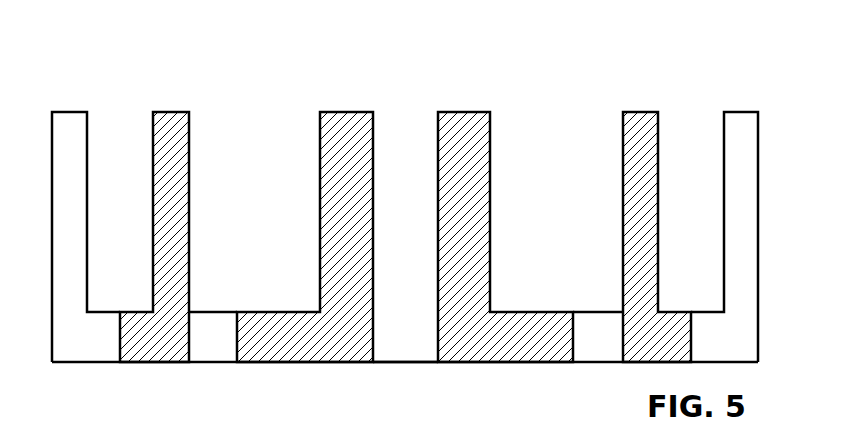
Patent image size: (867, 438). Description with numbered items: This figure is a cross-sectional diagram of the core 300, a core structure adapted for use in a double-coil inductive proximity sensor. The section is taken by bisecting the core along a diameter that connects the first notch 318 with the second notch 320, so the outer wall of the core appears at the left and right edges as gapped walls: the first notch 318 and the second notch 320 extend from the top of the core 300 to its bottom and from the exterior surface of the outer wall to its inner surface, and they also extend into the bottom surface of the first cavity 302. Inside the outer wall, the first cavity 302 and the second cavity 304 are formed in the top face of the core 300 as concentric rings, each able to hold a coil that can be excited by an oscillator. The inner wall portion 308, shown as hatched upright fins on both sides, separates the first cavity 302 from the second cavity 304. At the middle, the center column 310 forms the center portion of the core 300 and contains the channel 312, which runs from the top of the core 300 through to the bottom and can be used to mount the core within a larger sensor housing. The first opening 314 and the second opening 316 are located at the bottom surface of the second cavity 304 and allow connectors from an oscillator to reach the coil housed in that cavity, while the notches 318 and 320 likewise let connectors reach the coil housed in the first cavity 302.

The core 300 is at (436, 190).
The first cavity 302 is at (405, 216).
The second cavity 304 is at (436, 215).
The inner wall portion 308 is at (171, 158).
The center column 310 is at (348, 226).
The channel 312 is at (600, 331).
The first opening 314 is at (210, 326).
The second opening 316 is at (409, 128).
The first notch 318 is at (67, 226).
The second notch 320 is at (741, 246).